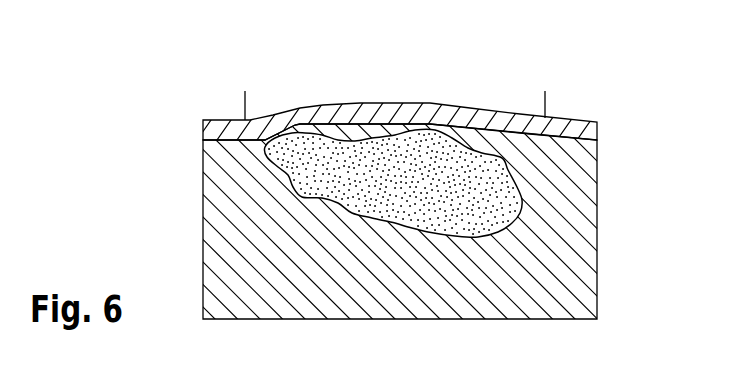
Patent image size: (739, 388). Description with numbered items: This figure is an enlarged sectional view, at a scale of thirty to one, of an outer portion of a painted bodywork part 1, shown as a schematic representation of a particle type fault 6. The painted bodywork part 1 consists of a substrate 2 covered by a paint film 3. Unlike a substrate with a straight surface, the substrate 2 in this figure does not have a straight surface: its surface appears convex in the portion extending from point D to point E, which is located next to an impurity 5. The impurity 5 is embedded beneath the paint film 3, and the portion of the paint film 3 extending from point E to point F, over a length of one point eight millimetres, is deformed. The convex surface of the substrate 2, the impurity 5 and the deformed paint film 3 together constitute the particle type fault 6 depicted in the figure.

The painted bodywork part 1 is at (369, 194).
The substrate 2 is at (597, 214).
The paint film 3 is at (597, 136).
The impurity 5 is at (485, 215).
The particle type fault 6 is at (547, 55).